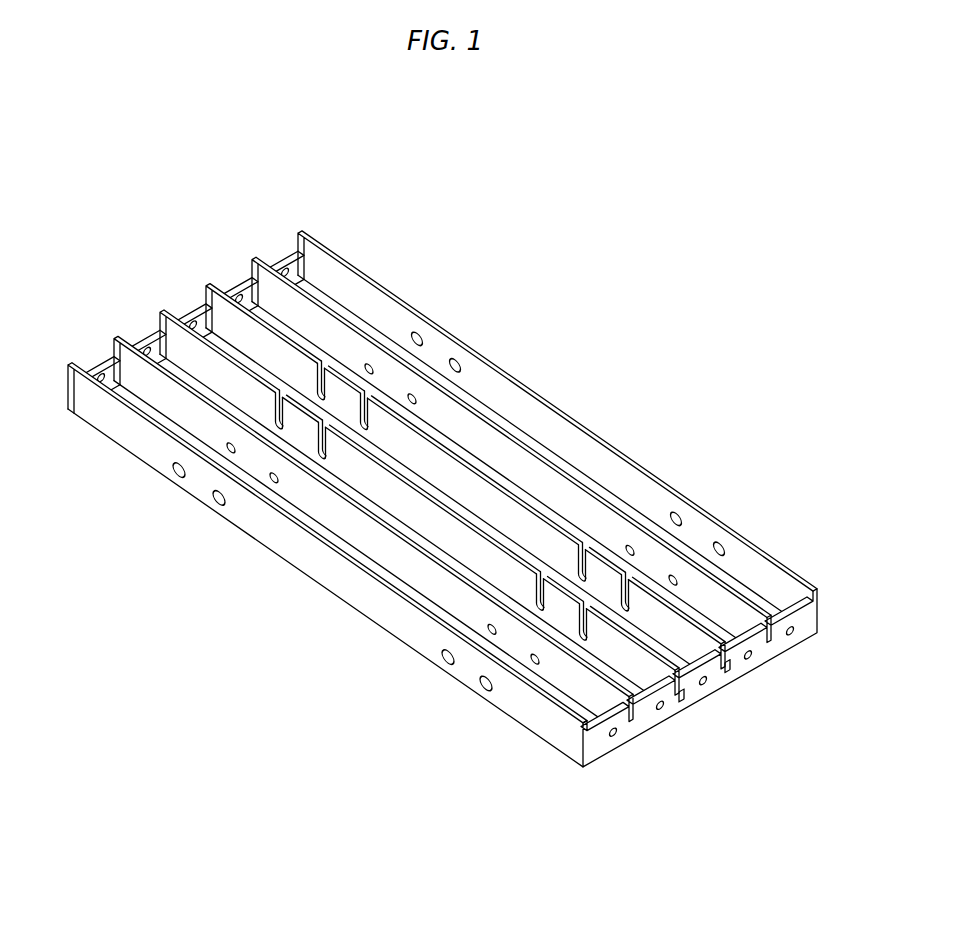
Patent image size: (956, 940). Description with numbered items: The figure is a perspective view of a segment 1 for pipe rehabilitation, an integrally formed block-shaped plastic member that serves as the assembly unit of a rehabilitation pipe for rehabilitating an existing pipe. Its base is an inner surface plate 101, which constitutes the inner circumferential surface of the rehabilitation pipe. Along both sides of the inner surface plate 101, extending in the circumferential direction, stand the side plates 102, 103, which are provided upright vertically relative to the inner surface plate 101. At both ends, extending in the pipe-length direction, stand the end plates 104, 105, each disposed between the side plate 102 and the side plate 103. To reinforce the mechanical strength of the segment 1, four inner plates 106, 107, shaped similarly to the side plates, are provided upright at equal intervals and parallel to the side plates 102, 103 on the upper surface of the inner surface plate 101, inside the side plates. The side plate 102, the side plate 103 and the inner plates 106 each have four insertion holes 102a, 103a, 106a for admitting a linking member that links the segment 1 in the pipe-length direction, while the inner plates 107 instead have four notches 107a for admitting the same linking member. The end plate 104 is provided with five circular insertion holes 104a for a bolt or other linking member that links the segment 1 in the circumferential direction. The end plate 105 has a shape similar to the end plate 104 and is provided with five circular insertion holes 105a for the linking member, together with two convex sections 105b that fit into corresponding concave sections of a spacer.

The segment 1 is at (439, 510).
The inner surface plate 101 is at (345, 310).
The side plate 102 is at (278, 540).
The insertion holes 102a is at (178, 481).
The side plate 103 is at (518, 382).
The insertion holes 103a is at (424, 341).
The end plate 104 is at (193, 307).
The circular insertion holes 104a is at (102, 373).
The end plate 105 is at (765, 647).
The circular insertion holes 105a is at (613, 741).
The convex sections 105b is at (678, 704).
The inner plates 106 is at (555, 498).
The insertion holes 106a is at (368, 365).
The inner plates 107 is at (563, 548).
The notches 107a is at (630, 577).